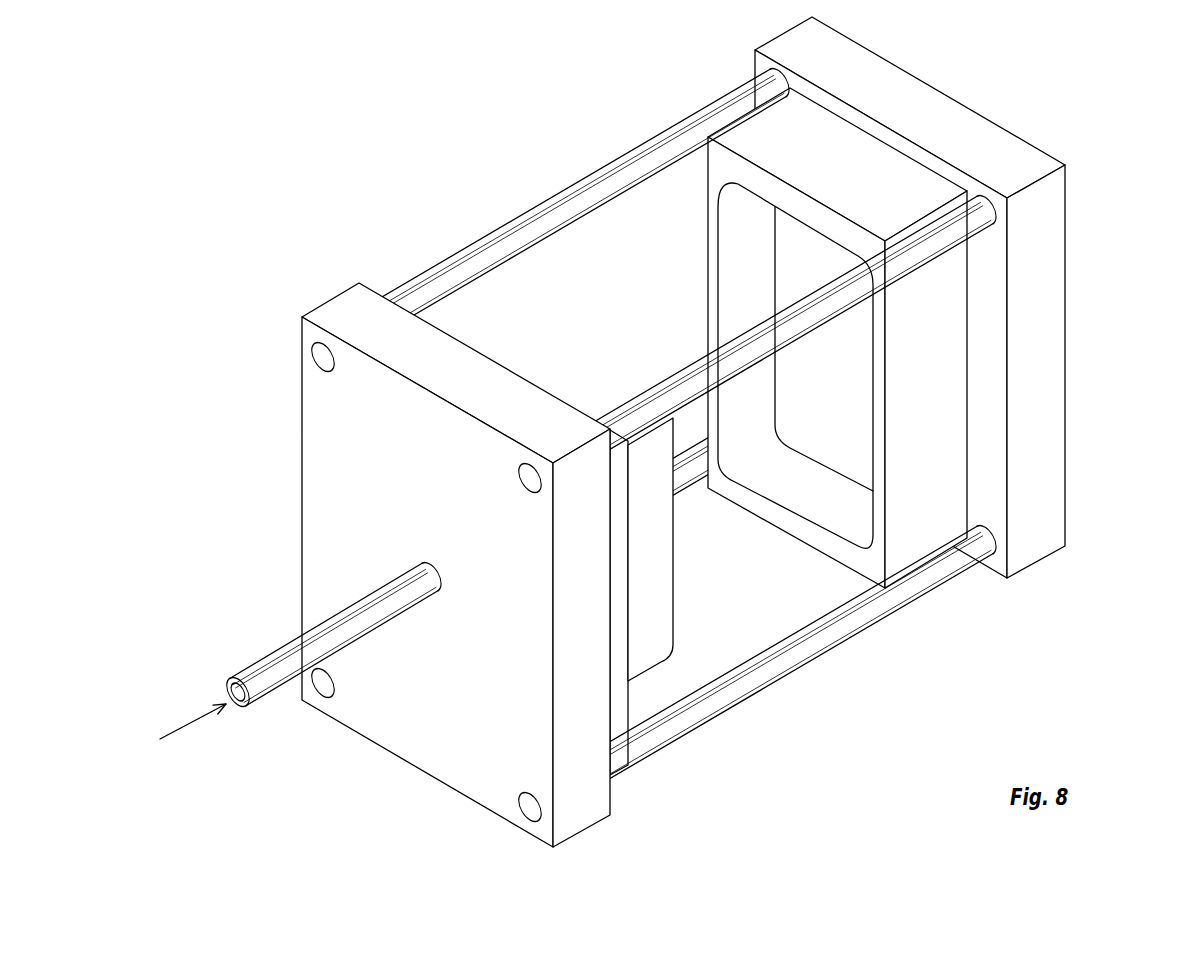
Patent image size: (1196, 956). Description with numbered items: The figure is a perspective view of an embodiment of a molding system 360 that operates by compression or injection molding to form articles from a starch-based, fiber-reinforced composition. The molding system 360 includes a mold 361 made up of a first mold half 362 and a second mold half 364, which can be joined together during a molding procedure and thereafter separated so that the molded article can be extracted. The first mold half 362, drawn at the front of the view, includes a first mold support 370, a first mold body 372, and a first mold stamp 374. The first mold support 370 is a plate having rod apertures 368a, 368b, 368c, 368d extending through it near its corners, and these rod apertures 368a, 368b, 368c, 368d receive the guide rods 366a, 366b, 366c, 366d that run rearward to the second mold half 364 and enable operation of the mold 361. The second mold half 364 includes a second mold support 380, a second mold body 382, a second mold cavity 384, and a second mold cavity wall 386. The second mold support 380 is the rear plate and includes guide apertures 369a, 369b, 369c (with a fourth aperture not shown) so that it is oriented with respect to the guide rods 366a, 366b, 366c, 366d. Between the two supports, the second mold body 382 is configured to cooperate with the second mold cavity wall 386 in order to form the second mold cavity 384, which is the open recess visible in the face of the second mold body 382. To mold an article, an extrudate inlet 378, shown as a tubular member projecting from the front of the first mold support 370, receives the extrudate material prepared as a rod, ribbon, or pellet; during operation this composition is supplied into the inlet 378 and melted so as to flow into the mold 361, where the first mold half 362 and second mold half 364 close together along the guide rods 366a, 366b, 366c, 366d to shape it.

The molding system 360 is at (269, 121).
The mold 361 is at (492, 47).
The first mold half 362 is at (365, 257).
The second mold half 364 is at (703, 88).
The guide rod 366a is at (552, 193).
The guide rod 366b is at (843, 342).
The guide rod 366c is at (816, 672).
The guide rod 366d is at (687, 470).
The rod aperture 368a is at (322, 357).
The rod aperture 368b is at (528, 478).
The rod aperture 368c is at (528, 808).
The rod aperture 368d is at (322, 684).
The guide aperture 369a is at (765, 44).
The guide aperture 369b is at (1000, 203).
The guide aperture 369c is at (1000, 537).
The first mold support 370 is at (400, 533).
The first mold body 372 is at (618, 698).
The first mold stamp 374 is at (653, 625).
The extrudate inlet 378 is at (258, 672).
The second mold support 380 is at (862, 60).
The second mold body 382 is at (880, 399).
The second mold cavity 384 is at (823, 497).
The second mold cavity wall 386 is at (845, 440).